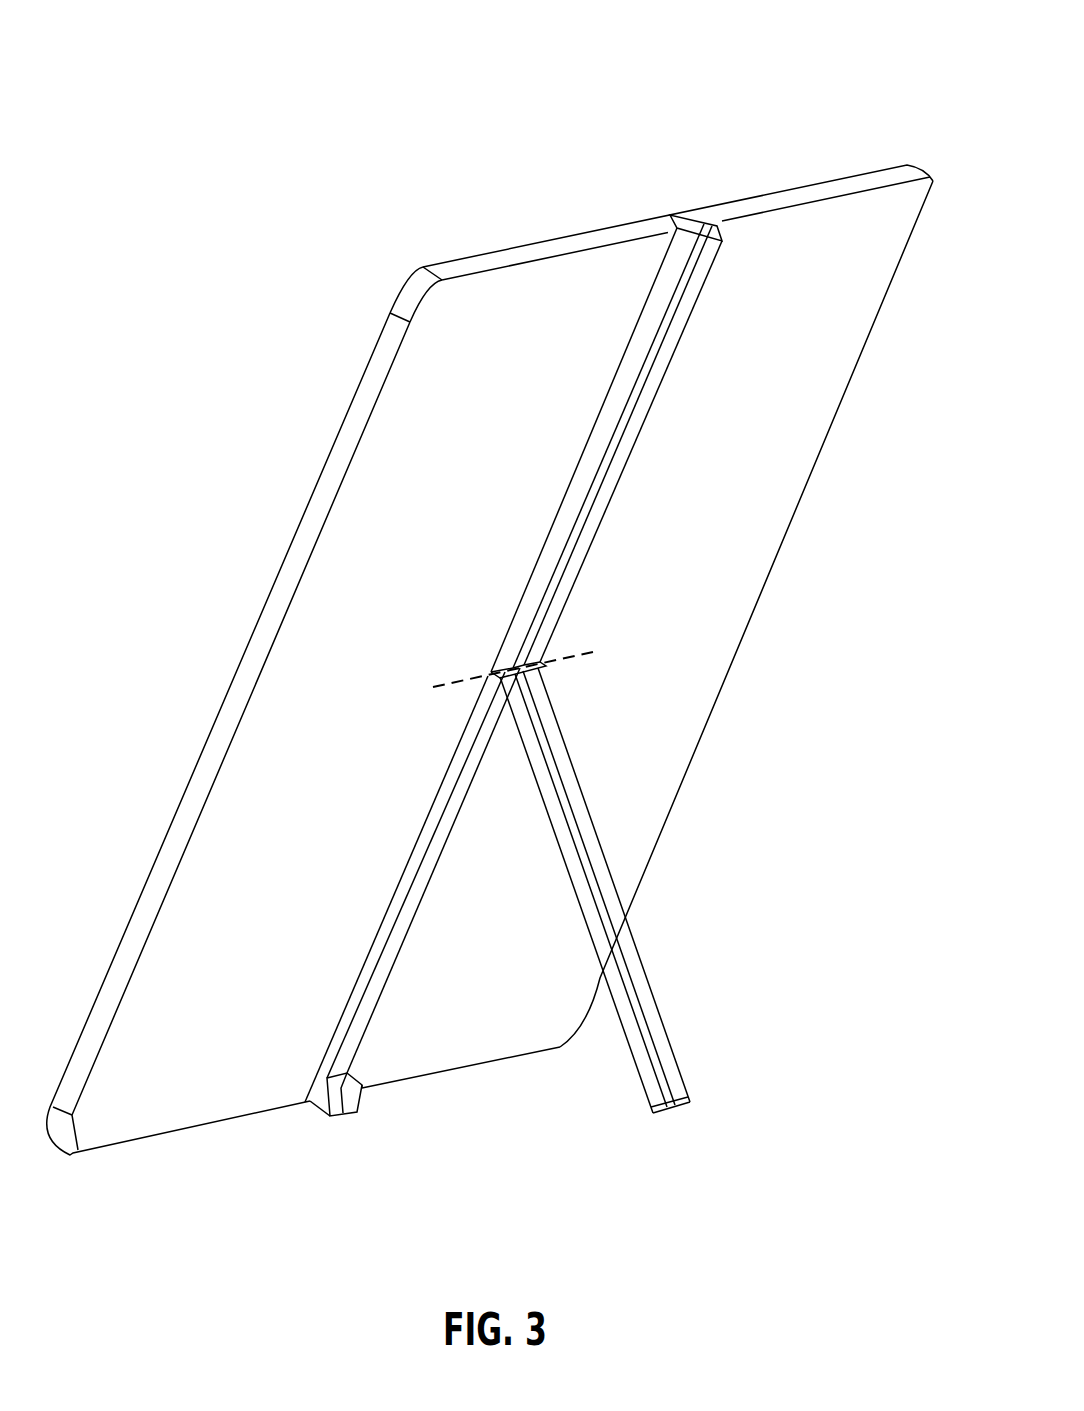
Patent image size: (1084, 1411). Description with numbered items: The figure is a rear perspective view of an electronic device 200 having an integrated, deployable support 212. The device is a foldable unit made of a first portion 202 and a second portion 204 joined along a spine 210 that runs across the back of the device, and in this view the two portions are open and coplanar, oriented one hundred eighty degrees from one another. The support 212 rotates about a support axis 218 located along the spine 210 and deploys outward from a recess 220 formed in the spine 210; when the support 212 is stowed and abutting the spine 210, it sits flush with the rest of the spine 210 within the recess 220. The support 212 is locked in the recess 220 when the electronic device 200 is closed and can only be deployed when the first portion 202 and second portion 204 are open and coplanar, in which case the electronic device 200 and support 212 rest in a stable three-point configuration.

The electronic device 200 is at (818, 84).
The first portion 202 is at (367, 360).
The second portion 204 is at (742, 200).
The spine 210 is at (665, 373).
The support 212 is at (645, 975).
The support axis 218 is at (567, 658).
The recess 220 is at (400, 978).